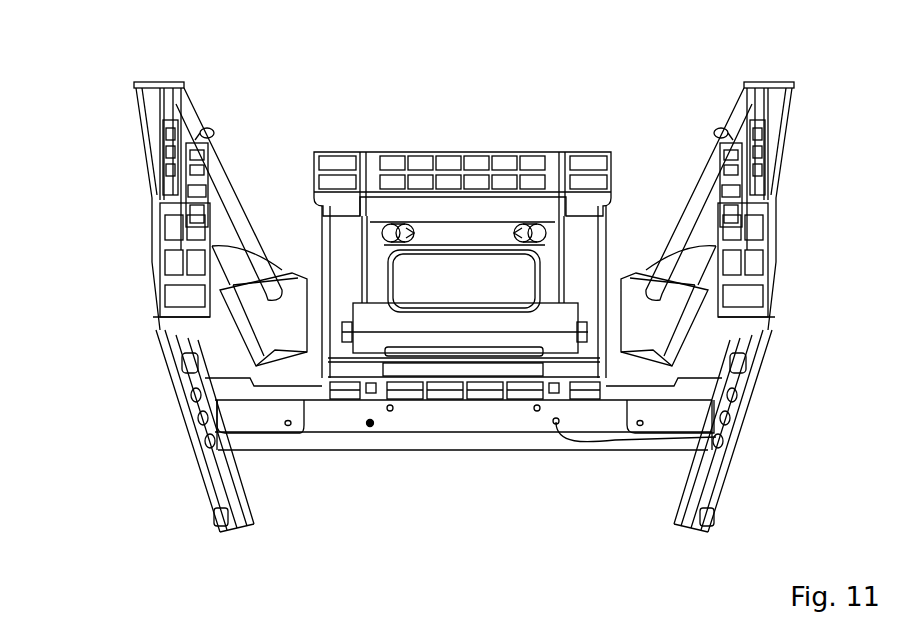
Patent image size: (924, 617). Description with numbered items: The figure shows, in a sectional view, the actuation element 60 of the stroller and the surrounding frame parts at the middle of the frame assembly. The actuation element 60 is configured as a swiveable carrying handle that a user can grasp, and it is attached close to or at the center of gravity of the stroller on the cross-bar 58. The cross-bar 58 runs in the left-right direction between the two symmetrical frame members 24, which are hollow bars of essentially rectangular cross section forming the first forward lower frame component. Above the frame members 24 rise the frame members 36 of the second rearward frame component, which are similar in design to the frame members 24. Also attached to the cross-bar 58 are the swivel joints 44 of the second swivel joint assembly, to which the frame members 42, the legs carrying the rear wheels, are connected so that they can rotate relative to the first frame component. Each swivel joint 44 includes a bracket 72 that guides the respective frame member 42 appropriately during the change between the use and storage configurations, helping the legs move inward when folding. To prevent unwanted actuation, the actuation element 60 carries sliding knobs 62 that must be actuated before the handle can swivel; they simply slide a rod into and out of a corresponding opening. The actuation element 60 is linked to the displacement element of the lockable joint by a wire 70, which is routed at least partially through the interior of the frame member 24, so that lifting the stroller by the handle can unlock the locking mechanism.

The frame member 24 is at (218, 482).
The frame member 36 is at (165, 108).
The frame member 42 is at (232, 215).
The swivel joint 44 is at (232, 336).
The cross-bar 58 is at (447, 422).
The actuation element 60 is at (461, 238).
The sliding knob 62 is at (405, 238).
The wire 70 is at (613, 438).
The bracket 72 is at (257, 338).